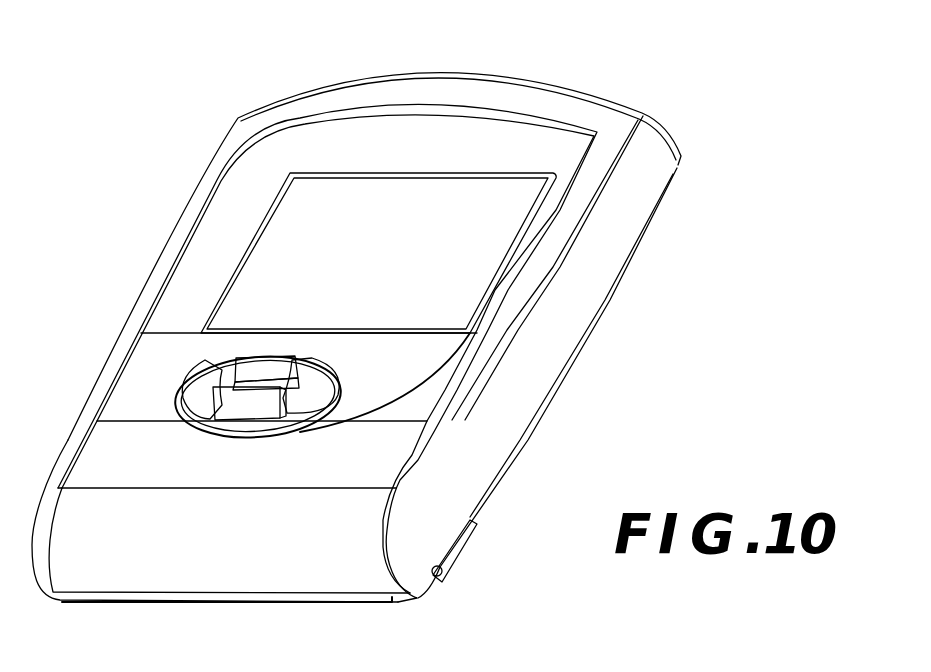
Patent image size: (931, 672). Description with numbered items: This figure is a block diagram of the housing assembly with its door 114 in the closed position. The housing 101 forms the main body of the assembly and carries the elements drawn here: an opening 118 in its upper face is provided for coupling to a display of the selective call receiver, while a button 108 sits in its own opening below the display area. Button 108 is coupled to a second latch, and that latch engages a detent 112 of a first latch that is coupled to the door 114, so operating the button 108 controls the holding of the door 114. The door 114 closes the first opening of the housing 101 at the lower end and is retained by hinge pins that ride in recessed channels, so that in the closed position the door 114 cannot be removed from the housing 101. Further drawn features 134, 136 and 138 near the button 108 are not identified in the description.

The housing 101 is at (583, 287).
The button 108 is at (190, 393).
The detent 112 is at (525, 596).
The door 114 is at (125, 558).
The opening 118 is at (463, 203).
The up key 134 is at (262, 367).
The left key 136 is at (220, 367).
The right key 138 is at (310, 380).